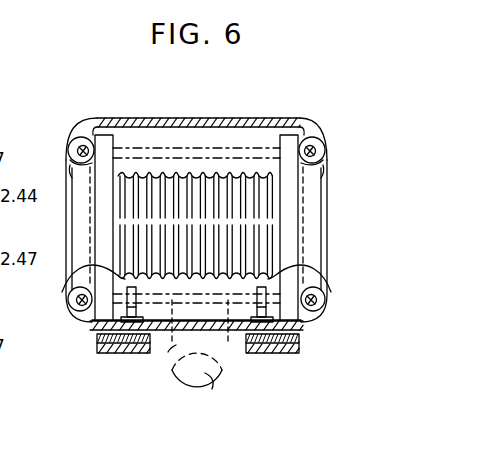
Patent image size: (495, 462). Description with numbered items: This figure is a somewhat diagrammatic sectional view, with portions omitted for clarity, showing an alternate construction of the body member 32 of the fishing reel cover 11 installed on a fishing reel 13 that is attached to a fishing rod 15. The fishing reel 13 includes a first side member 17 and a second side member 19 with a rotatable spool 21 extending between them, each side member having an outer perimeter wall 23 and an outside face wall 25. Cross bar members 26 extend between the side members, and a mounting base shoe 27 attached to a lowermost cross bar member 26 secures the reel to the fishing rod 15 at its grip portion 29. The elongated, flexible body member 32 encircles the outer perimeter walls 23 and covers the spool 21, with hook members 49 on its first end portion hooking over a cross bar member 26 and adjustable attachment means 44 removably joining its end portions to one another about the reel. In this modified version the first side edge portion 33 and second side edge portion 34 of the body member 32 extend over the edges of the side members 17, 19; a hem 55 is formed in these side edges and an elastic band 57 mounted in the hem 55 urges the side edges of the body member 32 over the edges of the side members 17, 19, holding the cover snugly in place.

The fishing reel cover 11 is at (276, 73).
The fishing reel 13 is at (300, 243).
The fishing rod 15 is at (188, 390).
The first side member 17 is at (70, 262).
The second side member 19 is at (292, 262).
The rotatable spool 21 is at (176, 183).
The outer perimeter wall 23 is at (106, 124).
The outside face wall 25 is at (90, 207).
The cross bar member 26 is at (204, 150).
The mounting base shoe 27 is at (164, 353).
The grip portion 29 is at (213, 392).
The body member 32 is at (219, 123).
The first side edge portion 33 is at (75, 170).
The second side edge portion 34 is at (323, 162).
The attachment means 44 is at (98, 337).
The hook member 49 is at (126, 292).
The hem 55 is at (72, 158).
The elastic band 57 is at (77, 140).